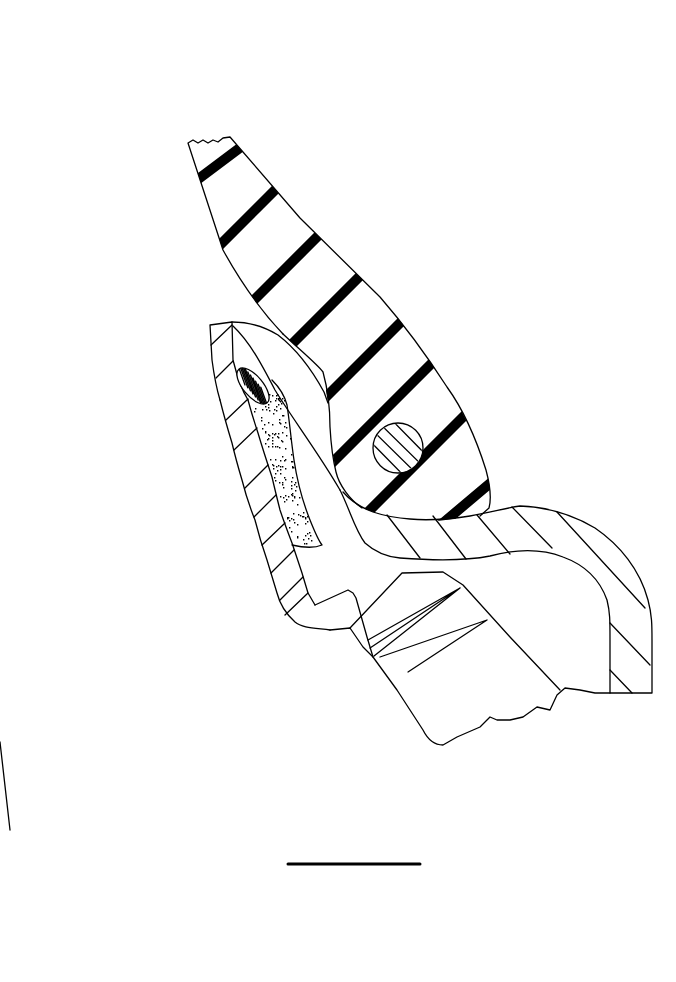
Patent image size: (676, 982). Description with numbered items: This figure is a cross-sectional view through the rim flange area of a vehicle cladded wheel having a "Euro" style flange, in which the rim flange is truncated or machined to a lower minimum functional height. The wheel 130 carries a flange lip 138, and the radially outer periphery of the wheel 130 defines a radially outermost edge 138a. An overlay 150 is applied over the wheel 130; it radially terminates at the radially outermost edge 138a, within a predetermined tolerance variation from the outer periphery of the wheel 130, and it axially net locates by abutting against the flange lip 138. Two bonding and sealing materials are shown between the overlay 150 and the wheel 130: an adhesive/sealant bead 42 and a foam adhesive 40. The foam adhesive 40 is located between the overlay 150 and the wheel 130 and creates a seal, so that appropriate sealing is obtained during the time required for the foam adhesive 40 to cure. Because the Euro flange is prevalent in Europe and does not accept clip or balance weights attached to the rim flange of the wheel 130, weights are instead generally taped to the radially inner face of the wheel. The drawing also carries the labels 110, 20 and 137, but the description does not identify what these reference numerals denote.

The wiper blade assembly 110 is at (130, 188).
The blade 20 is at (240, 190).
The wheel 130 is at (567, 497).
The overlay 150 is at (375, 680).
The adhesive/sealant bead 42 is at (238, 380).
The foam adhesive 40 is at (290, 543).
The adhesive 137 is at (303, 446).
The flange lip 138 is at (232, 339).
The radially outermost edge 138a is at (240, 322).